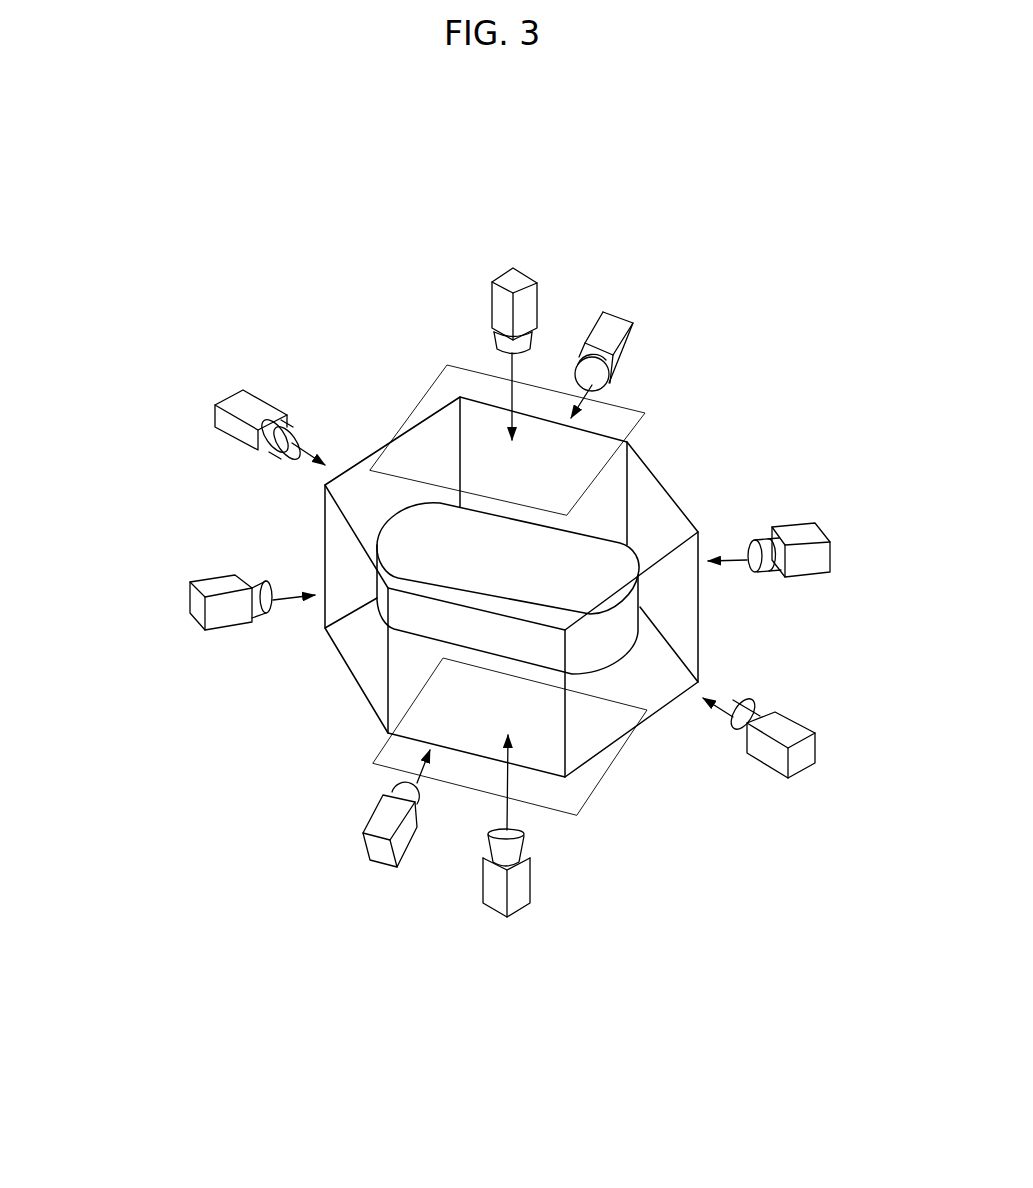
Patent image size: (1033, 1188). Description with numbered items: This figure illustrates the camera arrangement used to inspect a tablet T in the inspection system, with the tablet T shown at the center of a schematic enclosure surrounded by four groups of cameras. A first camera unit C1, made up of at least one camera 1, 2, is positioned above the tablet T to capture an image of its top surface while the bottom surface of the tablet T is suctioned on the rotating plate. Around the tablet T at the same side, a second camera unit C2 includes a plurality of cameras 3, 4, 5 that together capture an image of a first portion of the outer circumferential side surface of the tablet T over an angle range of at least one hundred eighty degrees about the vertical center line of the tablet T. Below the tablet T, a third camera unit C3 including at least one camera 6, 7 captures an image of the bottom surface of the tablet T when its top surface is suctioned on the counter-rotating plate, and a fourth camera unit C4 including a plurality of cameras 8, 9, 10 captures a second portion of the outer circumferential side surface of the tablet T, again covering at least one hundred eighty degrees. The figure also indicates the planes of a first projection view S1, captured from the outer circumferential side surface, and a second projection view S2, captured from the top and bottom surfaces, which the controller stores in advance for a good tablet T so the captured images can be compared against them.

The camera 1 is at (518, 342).
The camera 2 is at (518, 342).
The camera 3 is at (769, 536).
The camera 4 is at (611, 365).
The camera 5 is at (262, 425).
The camera 6 is at (506, 842).
The camera 7 is at (506, 842).
The camera 8 is at (759, 751).
The camera 9 is at (396, 825).
The camera 10 is at (252, 618).
The first camera unit C1 is at (469, 333).
The second camera unit C2 is at (557, 352).
The third camera unit C3 is at (556, 855).
The fourth camera unit C4 is at (437, 800).
The first projection view S1 is at (658, 674).
The second projection view S2 is at (553, 792).
The tablet T is at (613, 626).